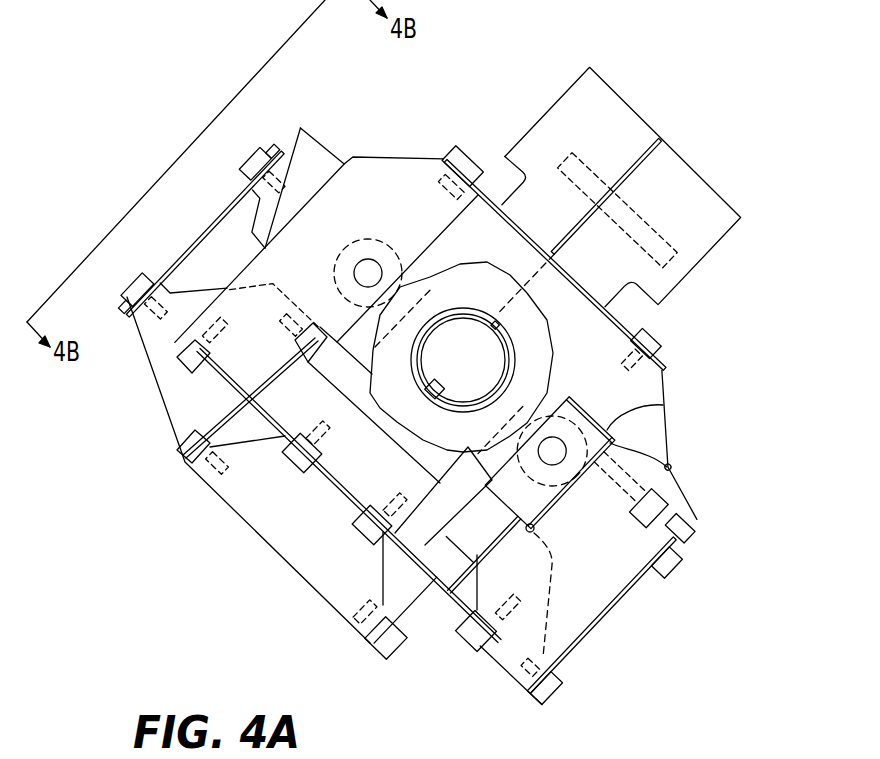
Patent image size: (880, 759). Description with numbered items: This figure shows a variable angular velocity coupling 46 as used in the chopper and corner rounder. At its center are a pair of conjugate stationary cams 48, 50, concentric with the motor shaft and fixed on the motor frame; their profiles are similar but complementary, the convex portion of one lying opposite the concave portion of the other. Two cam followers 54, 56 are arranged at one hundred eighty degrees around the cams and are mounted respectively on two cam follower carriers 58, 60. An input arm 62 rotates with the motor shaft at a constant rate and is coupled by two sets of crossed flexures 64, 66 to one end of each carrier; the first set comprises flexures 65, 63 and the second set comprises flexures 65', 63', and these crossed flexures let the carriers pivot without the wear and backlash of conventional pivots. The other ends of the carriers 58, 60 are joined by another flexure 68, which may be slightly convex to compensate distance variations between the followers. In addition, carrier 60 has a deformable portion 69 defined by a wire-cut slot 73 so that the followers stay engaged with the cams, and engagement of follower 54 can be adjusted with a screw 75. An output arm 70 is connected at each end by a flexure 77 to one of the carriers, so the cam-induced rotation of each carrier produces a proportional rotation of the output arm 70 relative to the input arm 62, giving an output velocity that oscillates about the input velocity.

The variable angular velocity coupling 46 is at (252, 582).
The stationary cam 48 is at (563, 390).
The stationary cam 50 is at (443, 505).
The cam follower 54 is at (568, 478).
The cam follower 56 is at (385, 247).
The cam follower carrier 58 is at (373, 173).
The cam follower carrier 60 is at (655, 440).
The input arm 62 is at (728, 200).
The flexure 63 is at (167, 347).
The flexure 63' is at (487, 656).
The crossed flexures 64 is at (212, 407).
The flexure 65 is at (156, 447).
The flexure 65' is at (379, 656).
The crossed flexures 66 is at (430, 611).
The flexure 68 is at (498, 182).
The deformable portion 69 is at (667, 464).
The output arm 70 is at (683, 523).
The wire-cut slot 73 is at (664, 404).
The screw 75 is at (660, 504).
The flexure 77 is at (210, 222).